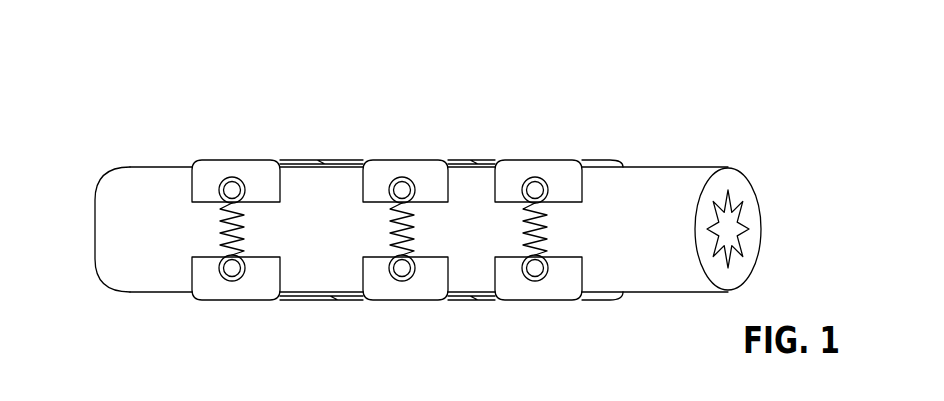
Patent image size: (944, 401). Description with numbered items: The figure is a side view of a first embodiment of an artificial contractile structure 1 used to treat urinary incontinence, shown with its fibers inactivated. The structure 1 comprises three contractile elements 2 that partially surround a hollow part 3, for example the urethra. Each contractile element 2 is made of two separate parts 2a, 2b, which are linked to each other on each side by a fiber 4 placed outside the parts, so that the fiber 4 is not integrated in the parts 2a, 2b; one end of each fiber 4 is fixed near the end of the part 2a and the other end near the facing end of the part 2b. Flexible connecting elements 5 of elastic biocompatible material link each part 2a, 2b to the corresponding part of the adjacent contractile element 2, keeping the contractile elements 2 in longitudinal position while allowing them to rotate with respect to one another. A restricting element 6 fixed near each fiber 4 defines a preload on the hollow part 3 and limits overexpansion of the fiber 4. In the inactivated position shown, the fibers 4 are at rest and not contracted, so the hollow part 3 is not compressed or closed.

The artificial contractile structure 1 is at (162, 93).
The contractile element 2 is at (430, 195).
The part of contractile element 2a is at (258, 170).
The part of contractile element 2b is at (257, 283).
The hollow part 3 is at (657, 202).
The fiber 4 is at (212, 237).
The flexible connecting element 5 is at (493, 158).
The restricting element 6 is at (517, 399).